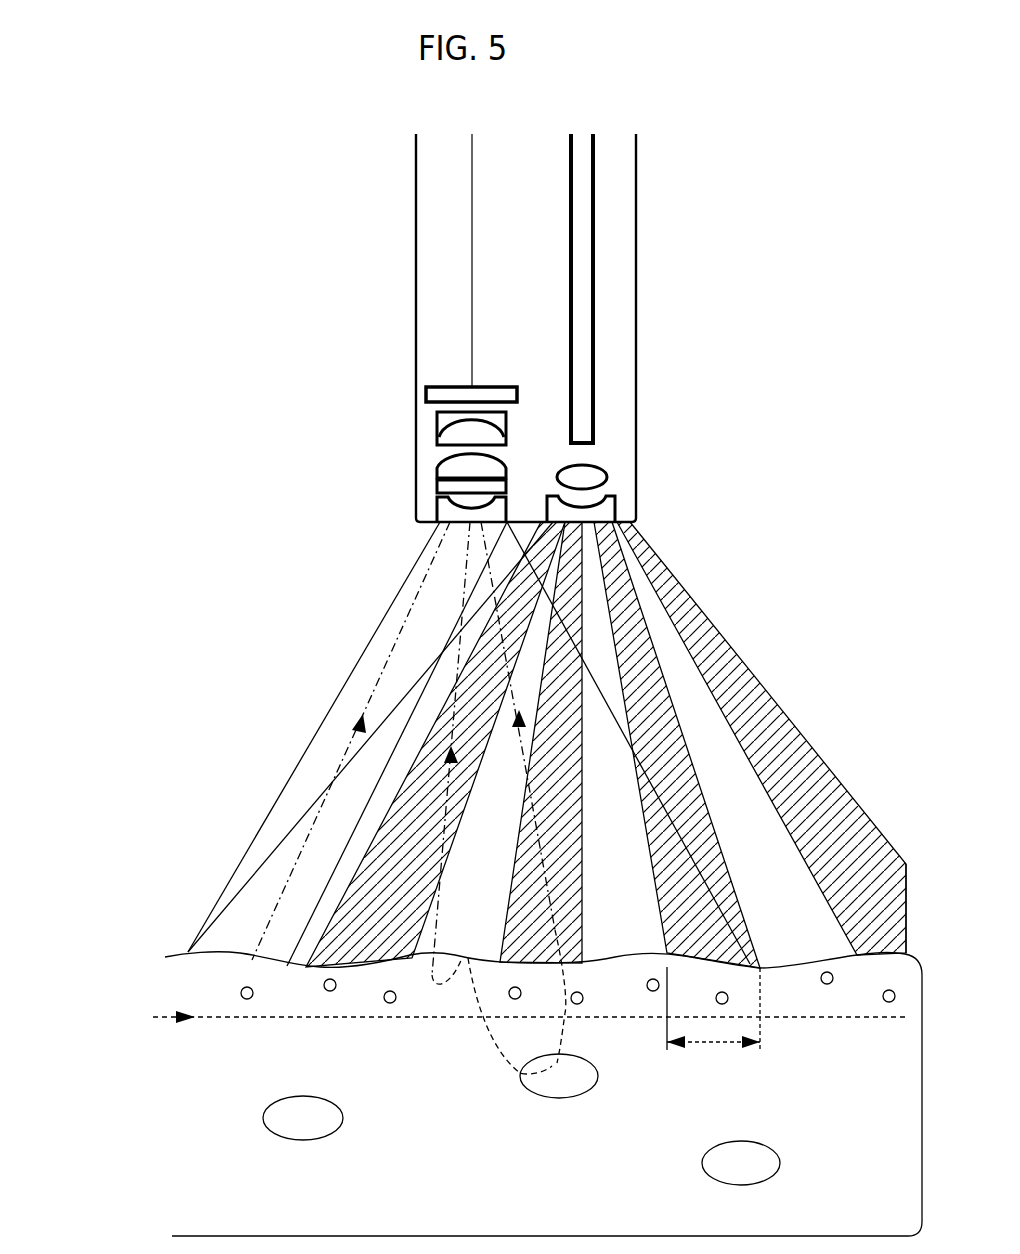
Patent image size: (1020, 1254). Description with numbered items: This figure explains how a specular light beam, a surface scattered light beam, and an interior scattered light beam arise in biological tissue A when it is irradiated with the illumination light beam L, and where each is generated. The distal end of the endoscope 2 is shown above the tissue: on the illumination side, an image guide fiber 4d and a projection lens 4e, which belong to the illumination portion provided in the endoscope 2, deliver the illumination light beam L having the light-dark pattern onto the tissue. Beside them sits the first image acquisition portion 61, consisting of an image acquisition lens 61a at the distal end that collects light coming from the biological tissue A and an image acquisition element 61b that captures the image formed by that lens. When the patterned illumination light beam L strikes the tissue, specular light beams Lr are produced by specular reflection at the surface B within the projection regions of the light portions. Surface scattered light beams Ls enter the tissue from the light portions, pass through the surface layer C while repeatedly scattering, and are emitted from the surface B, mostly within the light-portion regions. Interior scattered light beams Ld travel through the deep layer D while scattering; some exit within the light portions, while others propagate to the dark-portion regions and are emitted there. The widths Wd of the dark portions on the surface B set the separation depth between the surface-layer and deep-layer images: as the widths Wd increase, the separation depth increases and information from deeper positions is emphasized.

The endoscope 2 is at (636, 284).
The image guide fiber 4d is at (595, 398).
The projection lens 4e is at (625, 457).
The first image acquisition portion 61 is at (417, 412).
The image acquisition lens 61a is at (413, 410).
The image acquisition element 61b is at (426, 394).
The illumination light beam L is at (766, 699).
The specular light beam Lr is at (347, 742).
The surface scattered light beam Ls is at (447, 788).
The interior scattered light beam Ld is at (522, 744).
The biological tissue A is at (923, 953).
The surface B is at (903, 933).
The surface layer C is at (862, 980).
The deep layer D is at (857, 1125).
The width of the dark portion Wd is at (713, 1023).